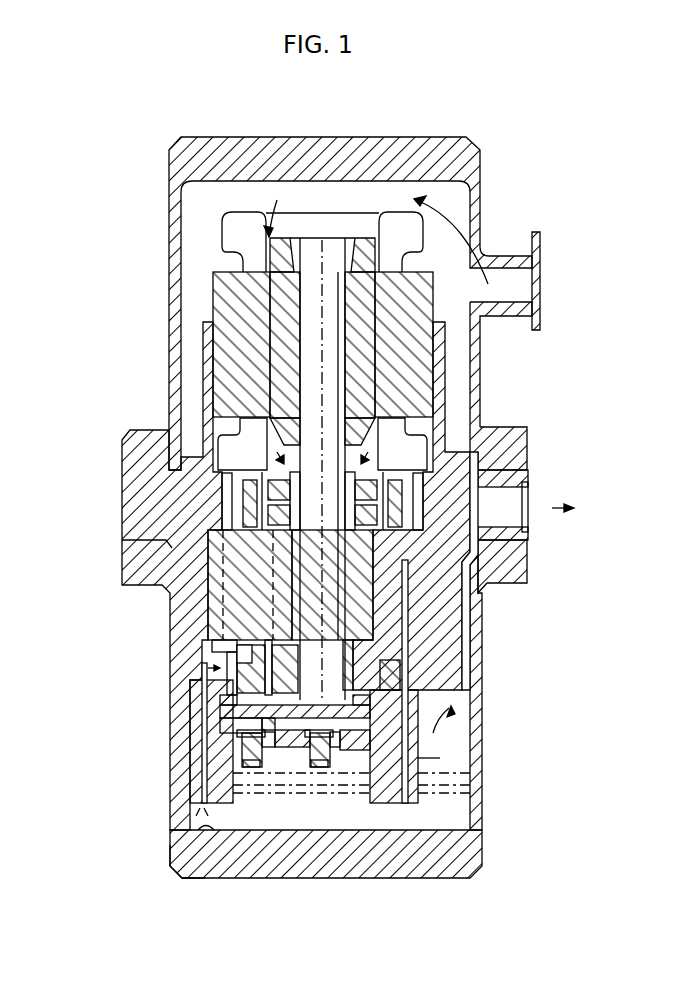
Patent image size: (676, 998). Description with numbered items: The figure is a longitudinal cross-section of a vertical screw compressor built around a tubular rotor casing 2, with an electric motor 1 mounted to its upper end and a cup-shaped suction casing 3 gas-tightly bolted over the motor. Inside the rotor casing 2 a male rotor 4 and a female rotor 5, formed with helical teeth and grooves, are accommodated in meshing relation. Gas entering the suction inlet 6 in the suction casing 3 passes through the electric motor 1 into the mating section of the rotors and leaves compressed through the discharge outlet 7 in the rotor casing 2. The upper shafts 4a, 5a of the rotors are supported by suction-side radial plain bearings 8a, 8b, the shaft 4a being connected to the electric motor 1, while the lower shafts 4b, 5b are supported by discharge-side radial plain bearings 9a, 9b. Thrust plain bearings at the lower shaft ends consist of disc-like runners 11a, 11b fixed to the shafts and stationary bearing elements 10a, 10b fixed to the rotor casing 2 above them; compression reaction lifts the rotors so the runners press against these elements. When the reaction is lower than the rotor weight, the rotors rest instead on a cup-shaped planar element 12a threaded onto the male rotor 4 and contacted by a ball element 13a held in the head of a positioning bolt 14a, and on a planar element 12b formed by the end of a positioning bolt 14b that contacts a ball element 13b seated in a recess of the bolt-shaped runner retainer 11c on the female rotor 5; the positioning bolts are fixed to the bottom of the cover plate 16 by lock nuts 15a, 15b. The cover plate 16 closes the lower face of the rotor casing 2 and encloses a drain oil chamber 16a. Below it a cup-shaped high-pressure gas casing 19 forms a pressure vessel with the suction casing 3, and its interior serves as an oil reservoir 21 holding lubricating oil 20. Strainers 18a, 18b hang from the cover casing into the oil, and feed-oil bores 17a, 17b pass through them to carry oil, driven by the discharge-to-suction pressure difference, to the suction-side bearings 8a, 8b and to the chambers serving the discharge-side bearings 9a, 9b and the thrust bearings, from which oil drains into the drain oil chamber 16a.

The electric motor 1 is at (424, 303).
The rotor casing 2 is at (436, 487).
The suction casing 3 is at (431, 150).
The male rotor 4 is at (347, 592).
The shaft of male rotor 4a is at (322, 432).
The other shaft of male rotor 4b is at (350, 655).
The female rotor 5 is at (237, 583).
The shaft of female rotor 5a is at (226, 477).
The other shaft of female rotor 5b is at (236, 656).
The suction inlet 6 is at (501, 284).
The discharge outlet 7 is at (512, 498).
The radial plain bearing 8a is at (320, 472).
The radial plain bearing 8b is at (232, 513).
The radial plain bearing 9a is at (390, 667).
The radial plain bearing 9b is at (248, 673).
The stationary bearing element 10a is at (372, 700).
The stationary bearing element 10b is at (256, 692).
The runner 11a is at (440, 758).
The runner 11b is at (235, 711).
The runner retainer 11c is at (262, 724).
The planar element 12a is at (450, 786).
The planar element 12b is at (236, 745).
The ball element 13a is at (313, 800).
The ball element 13b is at (262, 732).
The positioning bolt 14a is at (340, 800).
The positioning bolt 14b is at (243, 800).
The lock nut 15a is at (355, 800).
The lock nut 15b is at (240, 772).
The cover plate 16 is at (440, 741).
The drain oil chamber 16a is at (293, 800).
The feed-oil bore 17a is at (437, 818).
The feed-oil bore 17b is at (203, 807).
The strainer 18a is at (403, 800).
The strainer 18b is at (230, 830).
The high-pressure gas casing 19 is at (508, 574).
The lubricating oil 20 is at (433, 830).
The oil reservoir 21 is at (185, 878).